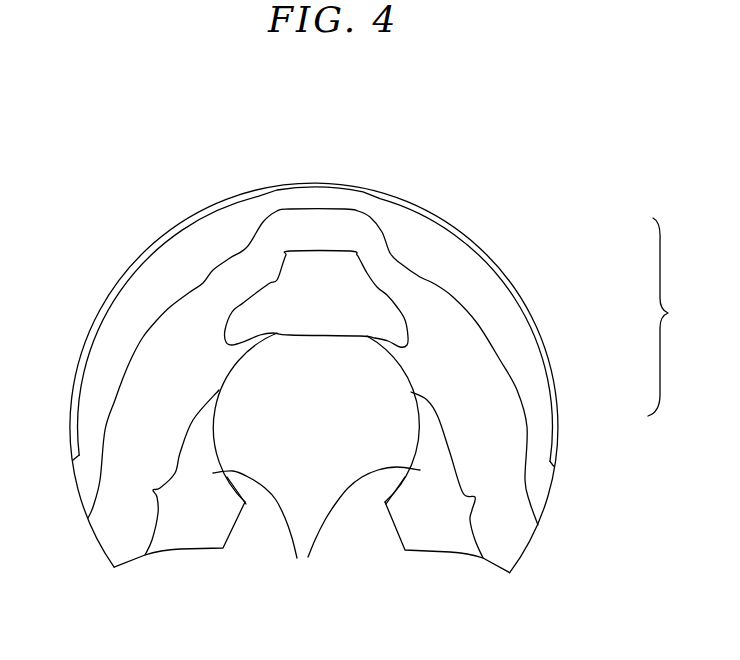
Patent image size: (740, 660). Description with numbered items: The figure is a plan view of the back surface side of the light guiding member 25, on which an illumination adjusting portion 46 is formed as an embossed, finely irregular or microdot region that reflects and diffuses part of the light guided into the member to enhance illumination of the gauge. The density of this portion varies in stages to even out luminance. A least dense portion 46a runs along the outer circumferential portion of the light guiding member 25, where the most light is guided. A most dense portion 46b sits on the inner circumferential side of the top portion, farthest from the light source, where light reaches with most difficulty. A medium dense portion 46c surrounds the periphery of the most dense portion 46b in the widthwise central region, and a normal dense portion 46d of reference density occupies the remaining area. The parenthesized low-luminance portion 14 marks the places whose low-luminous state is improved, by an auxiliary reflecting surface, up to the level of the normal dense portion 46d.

The light guiding member 25 is at (150, 230).
The illumination adjusting portion 46 is at (359, 346).
The least dense portion 46a is at (322, 181).
The most dense portion 46b is at (368, 303).
The medium dense portion 46c is at (447, 323).
The normal dense portion 46d is at (577, 350).
The low-luminance portion 14 is at (198, 532).